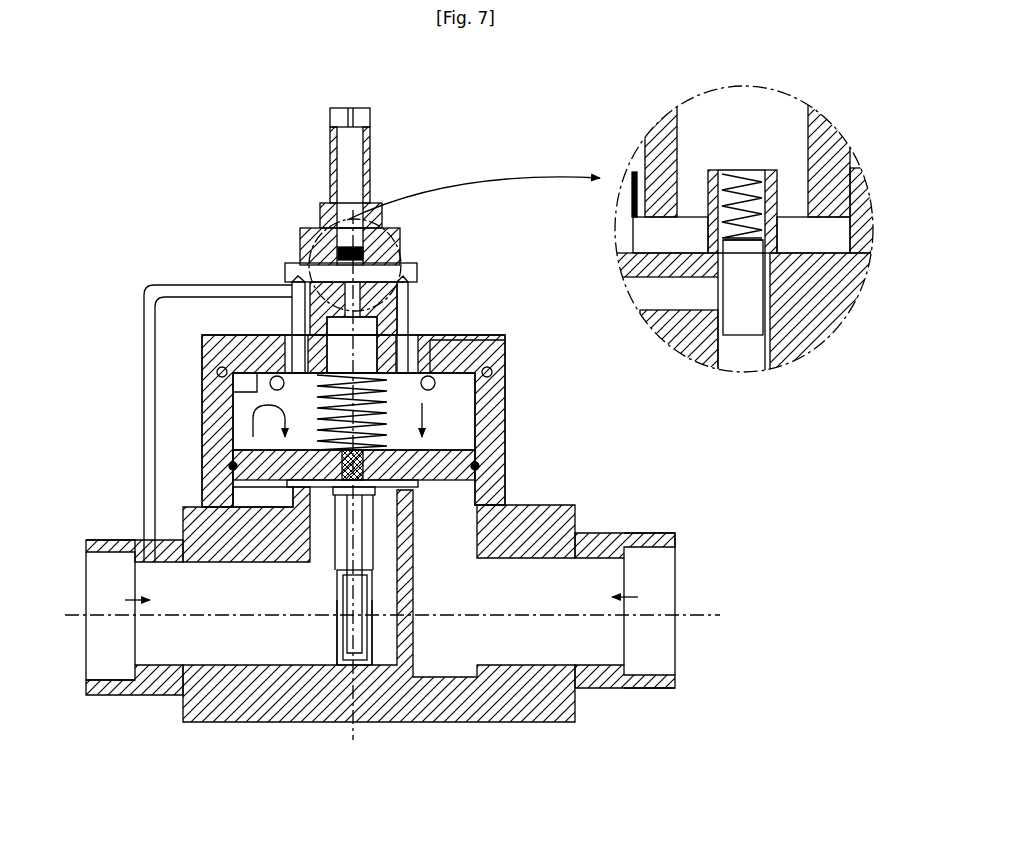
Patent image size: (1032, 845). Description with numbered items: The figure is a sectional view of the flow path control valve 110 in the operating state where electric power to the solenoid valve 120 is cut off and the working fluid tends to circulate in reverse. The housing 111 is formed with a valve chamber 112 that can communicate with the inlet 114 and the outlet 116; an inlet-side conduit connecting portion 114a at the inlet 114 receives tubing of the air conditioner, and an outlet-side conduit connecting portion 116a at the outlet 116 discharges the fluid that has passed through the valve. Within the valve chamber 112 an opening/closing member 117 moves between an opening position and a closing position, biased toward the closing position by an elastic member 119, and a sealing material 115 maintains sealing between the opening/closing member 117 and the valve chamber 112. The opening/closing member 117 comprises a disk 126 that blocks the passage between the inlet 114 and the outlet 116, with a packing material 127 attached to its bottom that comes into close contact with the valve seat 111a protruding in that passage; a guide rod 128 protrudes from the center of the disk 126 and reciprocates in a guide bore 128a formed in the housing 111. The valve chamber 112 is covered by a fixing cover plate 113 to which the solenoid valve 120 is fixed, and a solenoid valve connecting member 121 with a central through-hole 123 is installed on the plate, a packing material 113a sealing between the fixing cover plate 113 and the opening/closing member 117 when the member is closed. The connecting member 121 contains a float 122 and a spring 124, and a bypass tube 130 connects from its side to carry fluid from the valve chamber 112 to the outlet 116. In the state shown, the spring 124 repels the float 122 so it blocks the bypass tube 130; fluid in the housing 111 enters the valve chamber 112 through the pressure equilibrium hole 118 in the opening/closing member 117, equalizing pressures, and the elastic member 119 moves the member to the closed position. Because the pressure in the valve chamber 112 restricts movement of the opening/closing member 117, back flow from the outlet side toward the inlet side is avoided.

The flow path control valve 110 is at (528, 318).
The housing 111 is at (500, 495).
The valve seat 111a is at (240, 493).
The valve chamber 112 is at (468, 412).
The fixing cover plate 113 is at (484, 332).
The packing material 113a is at (428, 356).
The inlet 114 is at (538, 585).
The inlet-side conduit connecting portion 114a is at (600, 683).
The sealing material 115 is at (228, 466).
The outlet 116 is at (235, 590).
The outlet-side conduit connecting portion 116a is at (145, 685).
The opening/closing member 117 is at (582, 395).
The pressure equilibrium hole 118 is at (240, 435).
The elastic member 119 is at (235, 402).
The solenoid valve 120 is at (405, 172).
The solenoid valve connecting member 121 is at (408, 262).
The float 122 is at (750, 272).
The through-hole 123 is at (292, 268).
The spring 124 is at (762, 170).
The disk 126 is at (440, 482).
The packing material 127 is at (440, 446).
The guide rod 128 is at (345, 555).
The guide bore 128a is at (388, 648).
The bypass tube 130 is at (170, 292).